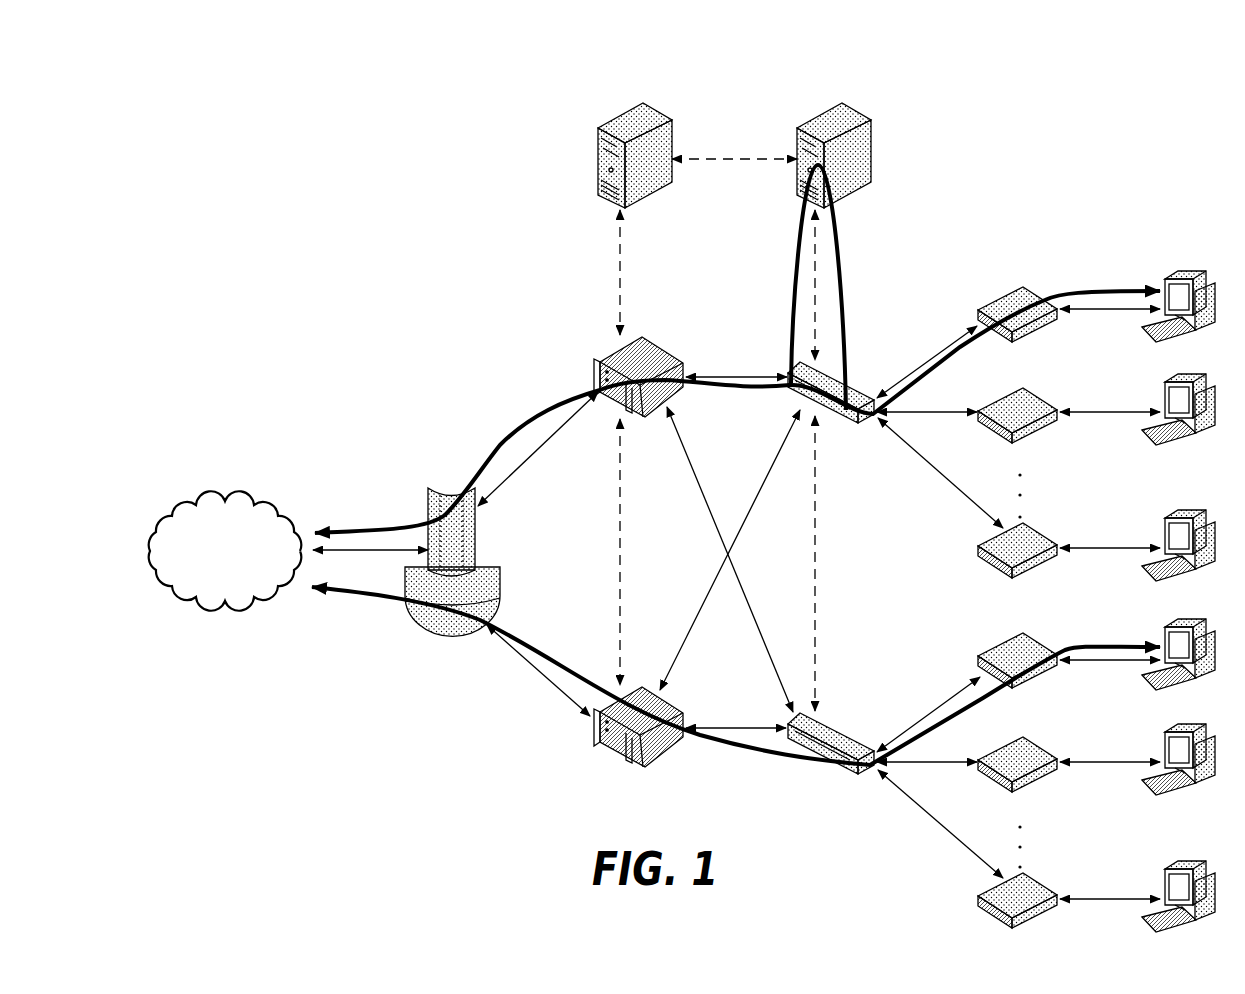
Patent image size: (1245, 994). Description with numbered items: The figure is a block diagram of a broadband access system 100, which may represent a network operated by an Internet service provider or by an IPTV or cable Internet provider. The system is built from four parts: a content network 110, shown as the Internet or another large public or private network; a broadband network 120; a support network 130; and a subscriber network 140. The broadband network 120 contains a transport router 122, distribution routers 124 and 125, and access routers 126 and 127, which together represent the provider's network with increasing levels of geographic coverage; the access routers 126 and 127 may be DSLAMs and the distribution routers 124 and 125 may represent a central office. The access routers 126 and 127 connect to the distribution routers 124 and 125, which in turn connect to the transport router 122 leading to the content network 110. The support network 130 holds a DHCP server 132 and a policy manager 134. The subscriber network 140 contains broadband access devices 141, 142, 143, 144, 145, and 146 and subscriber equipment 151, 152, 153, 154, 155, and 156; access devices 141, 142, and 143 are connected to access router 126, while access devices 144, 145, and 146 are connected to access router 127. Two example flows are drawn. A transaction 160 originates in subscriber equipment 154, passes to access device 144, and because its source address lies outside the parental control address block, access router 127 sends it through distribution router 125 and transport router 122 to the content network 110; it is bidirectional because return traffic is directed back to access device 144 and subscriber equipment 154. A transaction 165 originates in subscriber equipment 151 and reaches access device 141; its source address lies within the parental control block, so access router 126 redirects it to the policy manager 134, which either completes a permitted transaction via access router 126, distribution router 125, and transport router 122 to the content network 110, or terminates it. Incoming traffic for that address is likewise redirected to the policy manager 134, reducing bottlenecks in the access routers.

The broadband access system 100 is at (258, 820).
The content network 110 is at (228, 494).
The broadband network 120 is at (410, 388).
The transport router 122 is at (437, 488).
The distribution router 124 is at (612, 348).
The distribution router 125 is at (622, 748).
The access router 126 is at (843, 383).
The access router 127 is at (848, 732).
The support network 130 is at (745, 72).
The DHCP server 132 is at (663, 116).
The policy manager 134 is at (861, 116).
The subscriber network 140 is at (1105, 165).
The broadband access device 141 is at (1020, 288).
The broadband access device 142 is at (1020, 389).
The broadband access device 143 is at (986, 545).
The broadband access device 144 is at (1020, 634).
The broadband access device 145 is at (1020, 738).
The broadband access device 146 is at (988, 893).
The subscriber equipment 151 is at (1167, 280).
The subscriber equipment 152 is at (1167, 383).
The subscriber equipment 153 is at (1167, 519).
The subscriber equipment 154 is at (1167, 630).
The subscriber equipment 155 is at (1167, 735).
The subscriber equipment 156 is at (1167, 868).
The transaction 160 is at (527, 646).
The transaction 165 is at (535, 423).